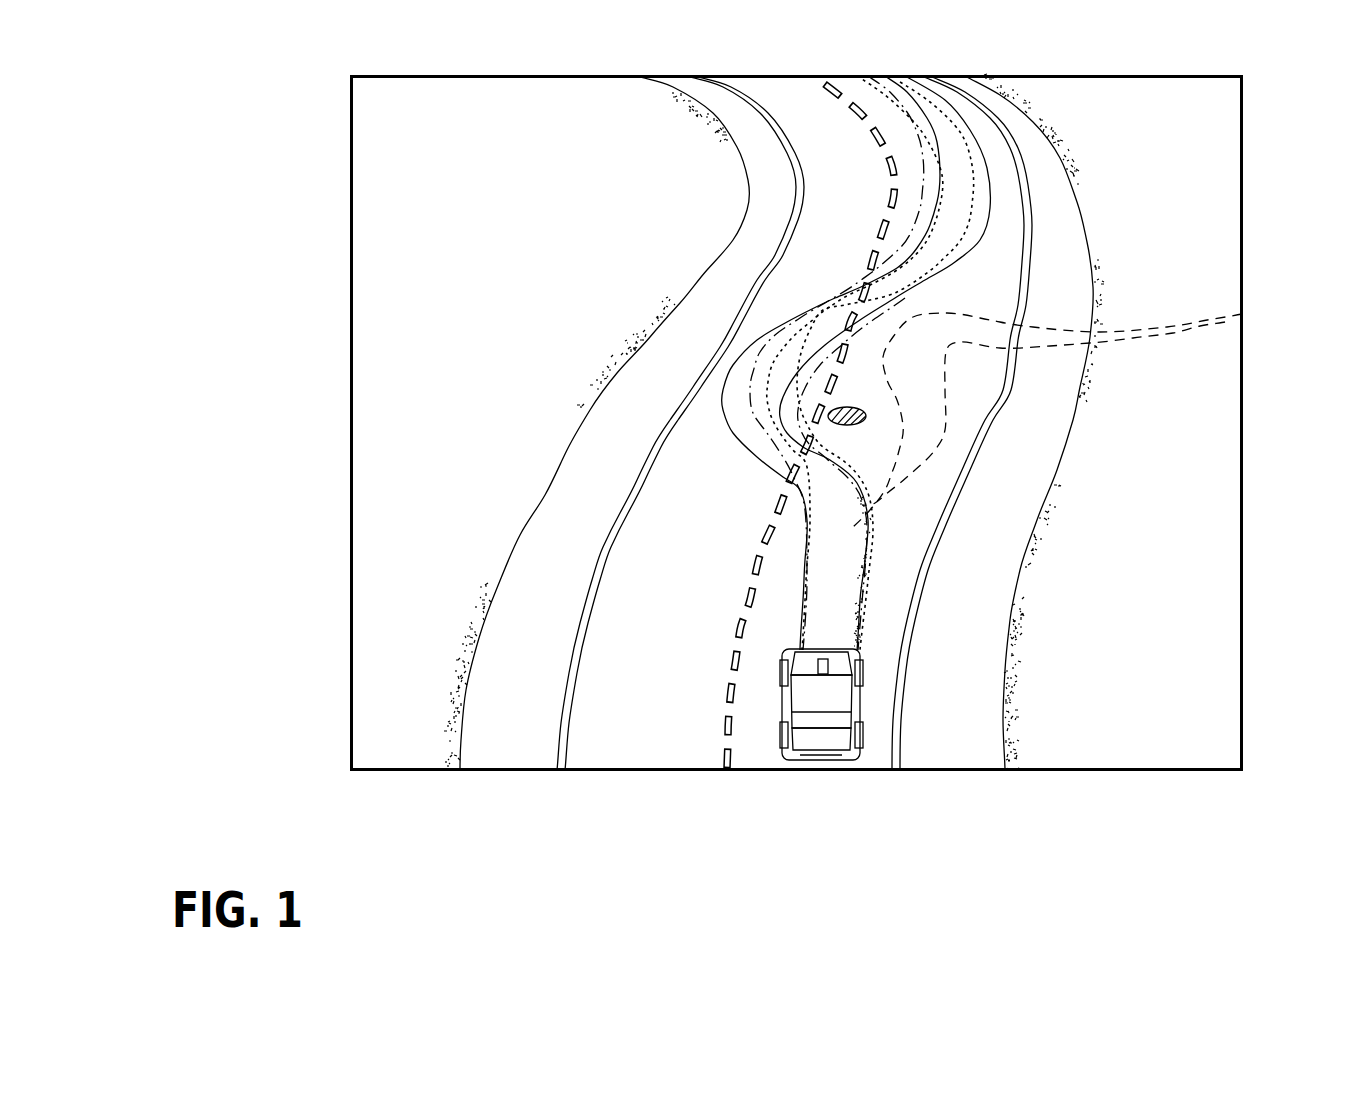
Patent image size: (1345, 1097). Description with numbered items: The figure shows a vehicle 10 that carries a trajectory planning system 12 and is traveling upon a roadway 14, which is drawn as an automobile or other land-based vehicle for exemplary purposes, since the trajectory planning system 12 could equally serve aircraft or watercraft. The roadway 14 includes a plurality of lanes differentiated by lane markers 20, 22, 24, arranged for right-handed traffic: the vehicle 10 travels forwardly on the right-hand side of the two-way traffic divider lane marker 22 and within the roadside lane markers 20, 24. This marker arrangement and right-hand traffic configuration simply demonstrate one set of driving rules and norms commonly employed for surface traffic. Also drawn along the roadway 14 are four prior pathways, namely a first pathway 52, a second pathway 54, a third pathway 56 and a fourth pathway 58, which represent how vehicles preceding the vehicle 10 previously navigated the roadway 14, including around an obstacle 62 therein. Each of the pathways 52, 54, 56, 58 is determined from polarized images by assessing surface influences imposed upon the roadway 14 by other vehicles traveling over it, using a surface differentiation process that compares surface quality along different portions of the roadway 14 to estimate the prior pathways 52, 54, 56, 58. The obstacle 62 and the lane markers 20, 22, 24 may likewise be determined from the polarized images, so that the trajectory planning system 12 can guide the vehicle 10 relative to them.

The vehicle 10 is at (870, 720).
The trajectory planning system 12 is at (823, 663).
The roadway 14 is at (898, 593).
The roadside lane marker 20 is at (903, 693).
The two-way traffic divider lane marker 22 is at (725, 721).
The roadside lane marker 24 is at (558, 738).
The first pathway 52 is at (1243, 313).
The second pathway 54 is at (850, 310).
The third pathway 56 is at (757, 362).
The fourth pathway 58 is at (830, 345).
The obstacle 62 is at (866, 410).